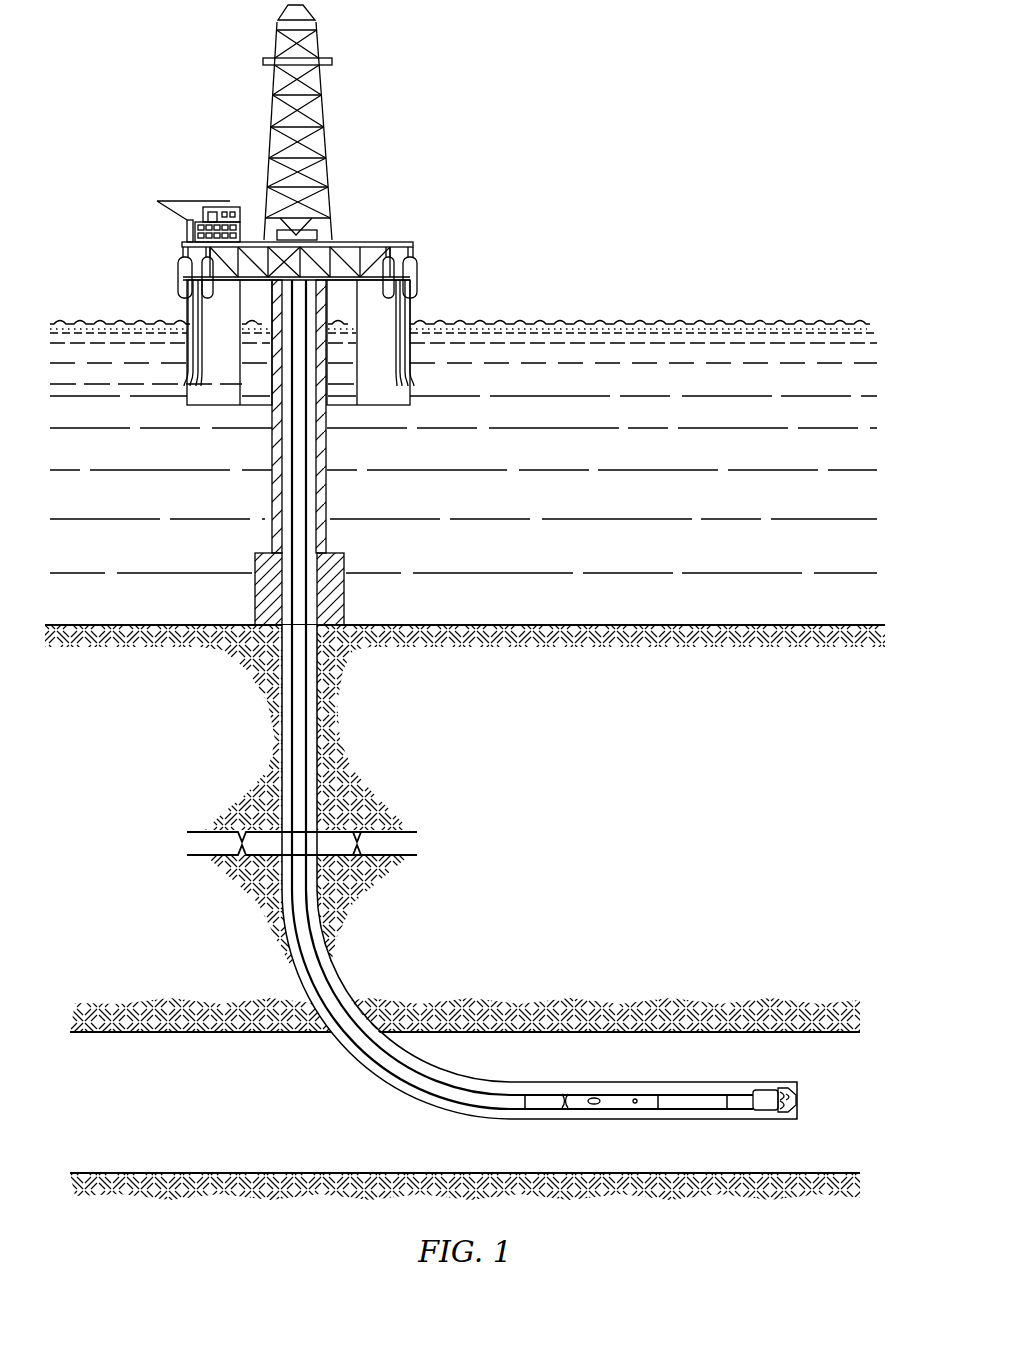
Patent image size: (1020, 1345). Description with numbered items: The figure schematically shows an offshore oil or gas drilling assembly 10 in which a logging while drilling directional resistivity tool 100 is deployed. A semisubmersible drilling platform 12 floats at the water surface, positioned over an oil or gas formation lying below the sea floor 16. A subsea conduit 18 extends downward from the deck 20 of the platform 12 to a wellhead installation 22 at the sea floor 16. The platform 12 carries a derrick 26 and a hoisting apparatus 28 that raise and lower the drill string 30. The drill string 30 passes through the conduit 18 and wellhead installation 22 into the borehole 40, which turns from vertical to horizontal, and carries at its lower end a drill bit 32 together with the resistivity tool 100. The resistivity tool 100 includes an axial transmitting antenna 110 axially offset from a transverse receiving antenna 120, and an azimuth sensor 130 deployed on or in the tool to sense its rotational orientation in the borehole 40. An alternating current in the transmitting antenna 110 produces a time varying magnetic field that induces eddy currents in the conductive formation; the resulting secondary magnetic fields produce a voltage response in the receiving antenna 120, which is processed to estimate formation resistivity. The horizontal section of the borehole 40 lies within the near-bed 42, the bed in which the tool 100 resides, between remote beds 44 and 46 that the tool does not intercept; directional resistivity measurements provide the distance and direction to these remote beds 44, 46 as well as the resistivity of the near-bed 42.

The offshore oil or gas drilling assembly 10 is at (309, 205).
The semisubmersible drilling platform 12 is at (400, 240).
The sea floor 16 is at (565, 622).
The subsea conduit 18 is at (327, 498).
The deck 20 is at (418, 276).
The wellhead installation 22 is at (343, 554).
The derrick 26 is at (300, 225).
The hoisting apparatus 28 is at (322, 46).
The drill string 30 is at (300, 419).
The drill bit 32 is at (787, 1090).
The borehole 40 is at (282, 727).
The near-bed 42 is at (182, 1114).
The remote bed 44 is at (165, 1004).
The remote bed 46 is at (167, 1219).
The logging while drilling directional resistivity tool 100 is at (542, 1110).
The transmitting antenna 110 is at (565, 1088).
The receiving antenna 120 is at (600, 1105).
The azimuth sensor 130 is at (635, 1095).